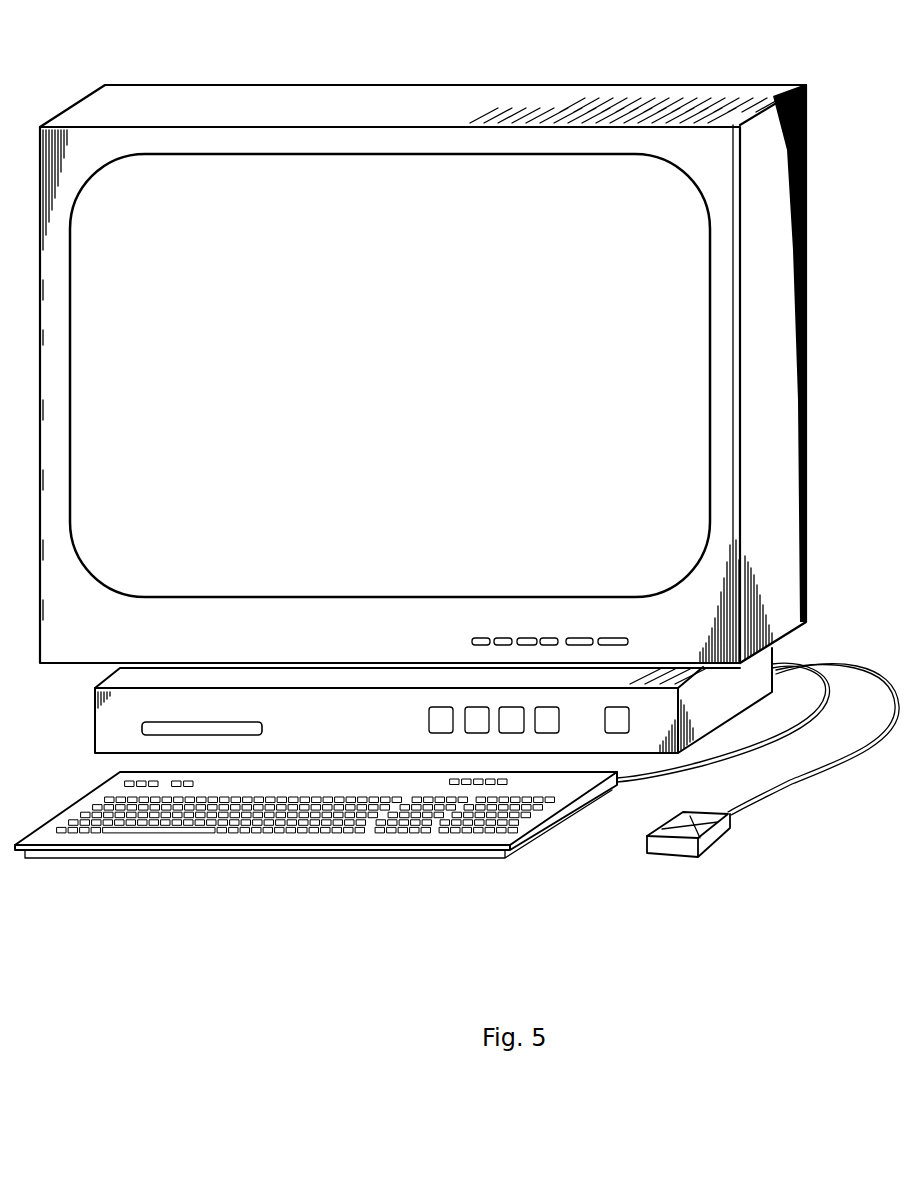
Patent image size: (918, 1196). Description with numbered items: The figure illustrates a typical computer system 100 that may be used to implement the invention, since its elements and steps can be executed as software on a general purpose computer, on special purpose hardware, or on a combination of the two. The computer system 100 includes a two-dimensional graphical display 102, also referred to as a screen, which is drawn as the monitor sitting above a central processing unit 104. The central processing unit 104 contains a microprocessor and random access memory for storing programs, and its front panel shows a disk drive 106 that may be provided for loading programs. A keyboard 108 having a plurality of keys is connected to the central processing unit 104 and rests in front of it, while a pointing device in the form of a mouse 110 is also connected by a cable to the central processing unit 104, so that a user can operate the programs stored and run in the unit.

The computer system 100 is at (423, 337).
The two-dimensional graphical display 102 is at (589, 502).
The central processing unit 104 is at (395, 700).
The disk drive 106 is at (265, 729).
The keyboard 108 is at (70, 803).
The mouse 110 is at (715, 835).